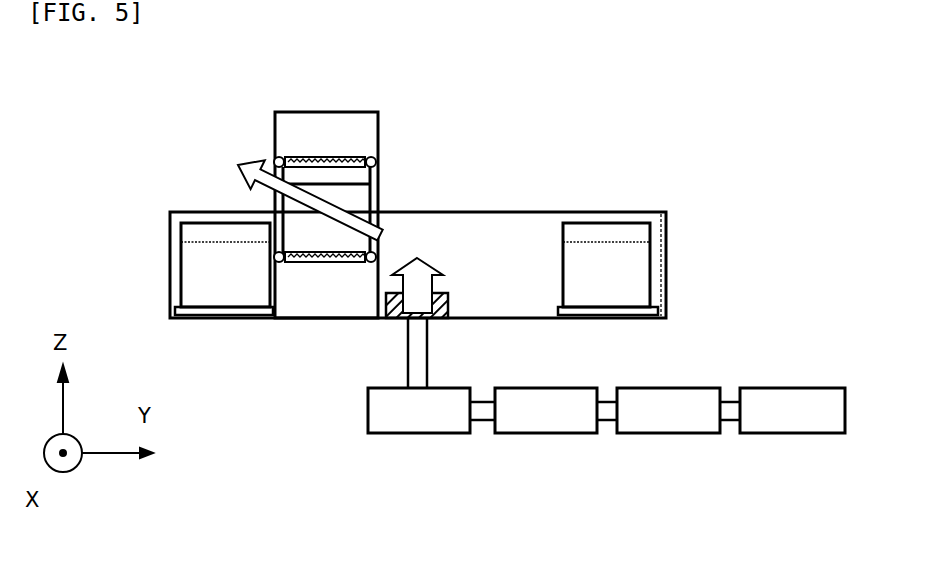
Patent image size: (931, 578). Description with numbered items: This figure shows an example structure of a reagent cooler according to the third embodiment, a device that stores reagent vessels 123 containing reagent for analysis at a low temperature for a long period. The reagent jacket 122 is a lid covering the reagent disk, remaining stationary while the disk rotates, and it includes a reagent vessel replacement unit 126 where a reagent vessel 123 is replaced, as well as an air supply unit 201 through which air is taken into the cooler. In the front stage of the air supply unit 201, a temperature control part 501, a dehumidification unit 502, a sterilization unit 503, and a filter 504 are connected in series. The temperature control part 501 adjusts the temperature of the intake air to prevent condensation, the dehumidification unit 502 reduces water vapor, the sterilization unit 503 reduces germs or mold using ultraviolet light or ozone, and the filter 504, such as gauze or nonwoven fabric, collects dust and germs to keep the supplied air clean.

The reagent jacket 122 is at (218, 211).
The reagent vessel replacement unit 126 is at (274, 130).
The reagent vessel 123 is at (355, 200).
The air supply unit 201 is at (447, 292).
The temperature control part 501 is at (419, 410).
The dehumidification unit 502 is at (546, 410).
The sterilization unit 503 is at (668, 410).
The filter 504 is at (792, 410).